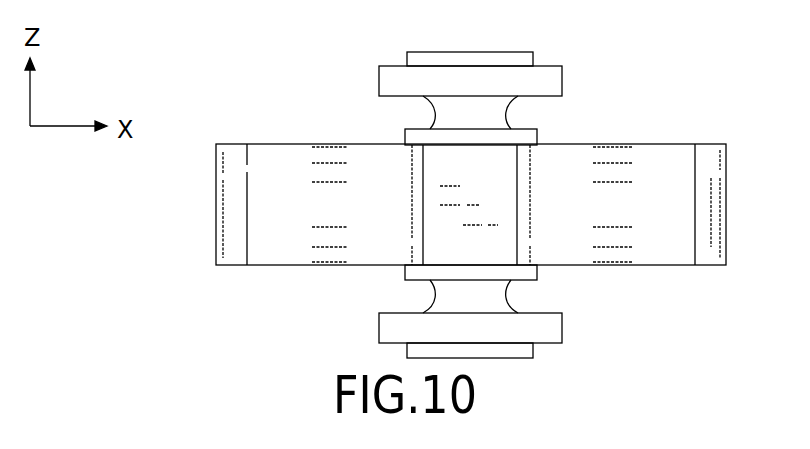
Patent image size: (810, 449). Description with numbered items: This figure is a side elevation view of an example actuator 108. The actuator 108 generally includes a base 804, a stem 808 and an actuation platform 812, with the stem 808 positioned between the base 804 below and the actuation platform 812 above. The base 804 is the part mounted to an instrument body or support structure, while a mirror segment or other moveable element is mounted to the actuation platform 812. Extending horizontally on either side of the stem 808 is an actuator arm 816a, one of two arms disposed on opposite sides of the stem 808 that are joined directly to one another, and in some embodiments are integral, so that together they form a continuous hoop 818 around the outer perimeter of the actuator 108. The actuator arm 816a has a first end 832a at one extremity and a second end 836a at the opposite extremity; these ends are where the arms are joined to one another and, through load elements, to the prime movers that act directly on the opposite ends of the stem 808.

The actuator 108 is at (280, 122).
The actuation platform 812 is at (523, 52).
The stem 808 is at (538, 143).
The base 804 is at (513, 358).
The actuator arm 816a is at (672, 153).
The second end of actuator arm 836a is at (715, 196).
The first end of actuator arm 832a is at (228, 242).
The continuous hoop 818 is at (271, 265).